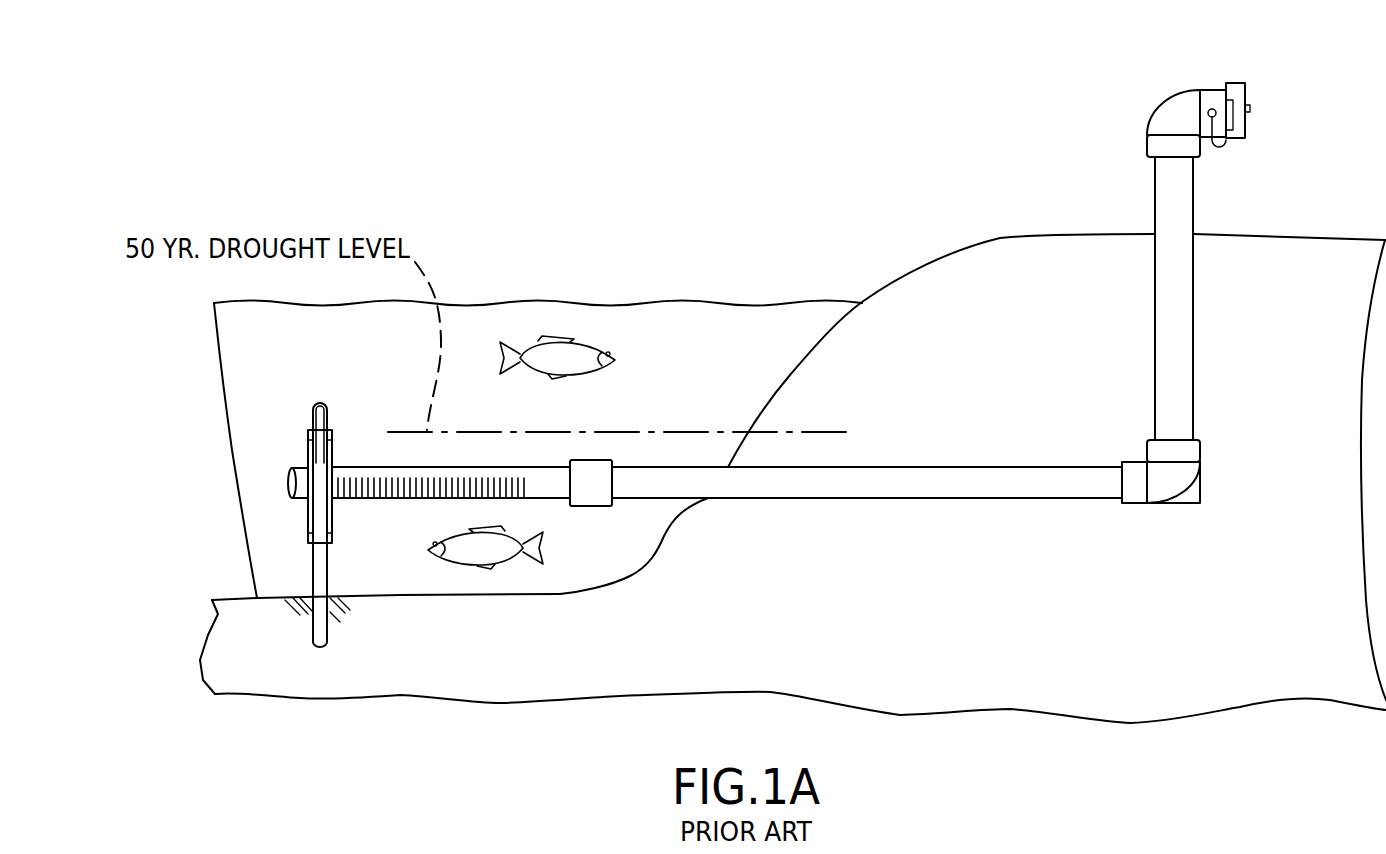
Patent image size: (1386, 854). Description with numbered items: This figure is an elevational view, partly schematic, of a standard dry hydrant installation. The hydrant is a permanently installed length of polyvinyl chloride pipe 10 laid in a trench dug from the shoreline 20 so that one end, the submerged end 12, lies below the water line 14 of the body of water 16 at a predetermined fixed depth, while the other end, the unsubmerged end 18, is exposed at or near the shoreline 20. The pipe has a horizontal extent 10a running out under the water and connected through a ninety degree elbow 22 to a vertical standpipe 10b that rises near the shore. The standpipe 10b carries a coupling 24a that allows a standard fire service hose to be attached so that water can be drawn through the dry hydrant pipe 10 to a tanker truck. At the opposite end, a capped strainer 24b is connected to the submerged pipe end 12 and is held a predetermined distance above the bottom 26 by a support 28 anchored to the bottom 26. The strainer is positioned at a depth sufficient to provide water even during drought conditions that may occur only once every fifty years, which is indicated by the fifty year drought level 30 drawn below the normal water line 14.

The pipe 10 is at (749, 333).
The horizontal extent of the pipe 10a is at (727, 487).
The vertical standpipe 10b is at (1176, 318).
The submerged end 12 is at (704, 483).
The water line 14 is at (700, 302).
The body of water 16 is at (290, 392).
The unsubmerged end 18 is at (1180, 182).
The shoreline 20 is at (948, 256).
The 90° elbow 22 is at (1167, 482).
The coupling 24a is at (1175, 110).
The capped strainer 24b is at (292, 483).
The bottom 26 is at (238, 598).
The support 28 is at (322, 505).
The fifty year drought level 30 is at (628, 430).